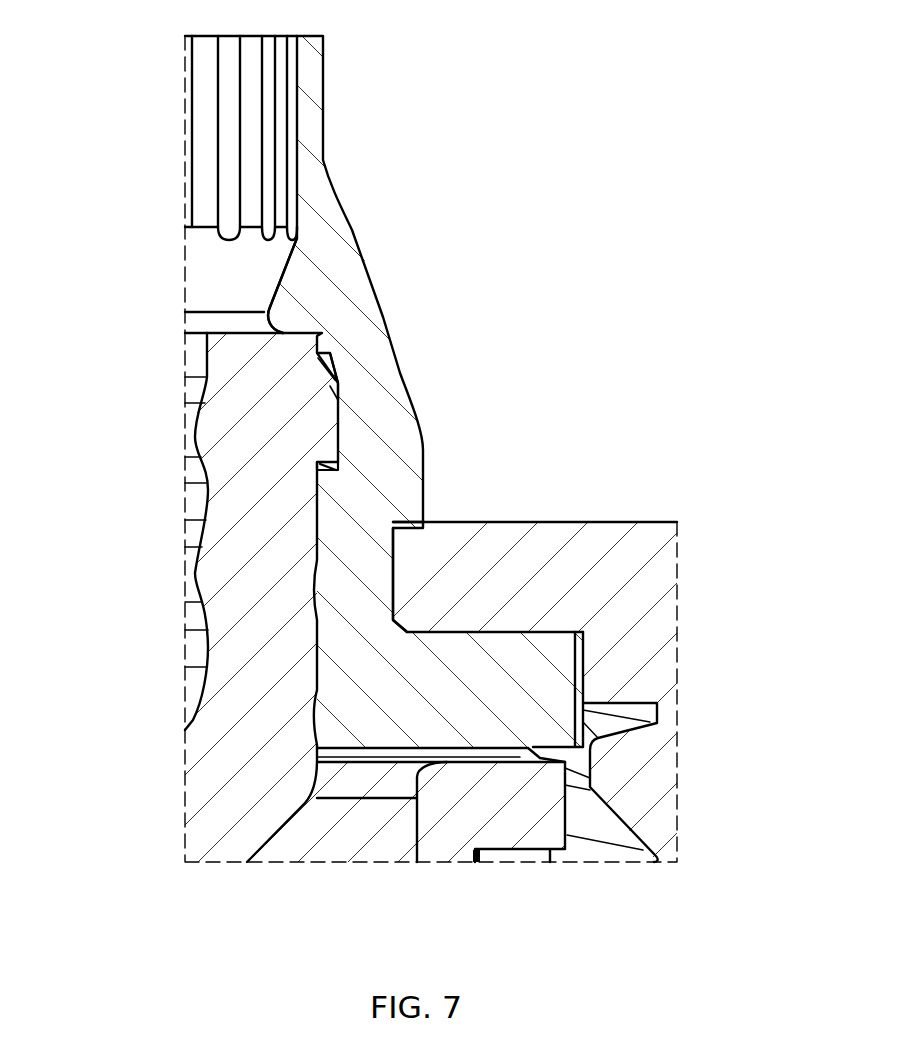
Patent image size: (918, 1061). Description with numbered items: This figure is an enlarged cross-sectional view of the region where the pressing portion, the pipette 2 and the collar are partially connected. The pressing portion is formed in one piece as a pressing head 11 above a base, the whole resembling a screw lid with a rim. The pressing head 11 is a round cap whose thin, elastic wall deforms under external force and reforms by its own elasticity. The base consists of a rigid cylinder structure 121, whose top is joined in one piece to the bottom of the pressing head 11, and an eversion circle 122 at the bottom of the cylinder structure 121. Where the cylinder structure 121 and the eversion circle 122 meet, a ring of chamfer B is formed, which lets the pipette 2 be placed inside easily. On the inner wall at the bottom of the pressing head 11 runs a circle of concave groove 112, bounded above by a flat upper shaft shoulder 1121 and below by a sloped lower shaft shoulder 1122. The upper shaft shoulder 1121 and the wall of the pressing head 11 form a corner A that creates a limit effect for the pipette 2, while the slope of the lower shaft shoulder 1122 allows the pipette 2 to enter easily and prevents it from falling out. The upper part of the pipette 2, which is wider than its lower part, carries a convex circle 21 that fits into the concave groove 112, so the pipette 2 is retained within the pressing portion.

The pressing head 11 is at (323, 73).
The concave groove 112 is at (337, 400).
The upper shaft shoulder 1121 is at (302, 335).
The lower shaft shoulder 1122 is at (328, 466).
The cylinder structure 121 is at (397, 572).
The eversion circle 122 is at (505, 632).
The pipette 2 is at (212, 765).
The convex circle 21 is at (337, 423).
The corner A is at (268, 312).
The chamfer B is at (370, 740).